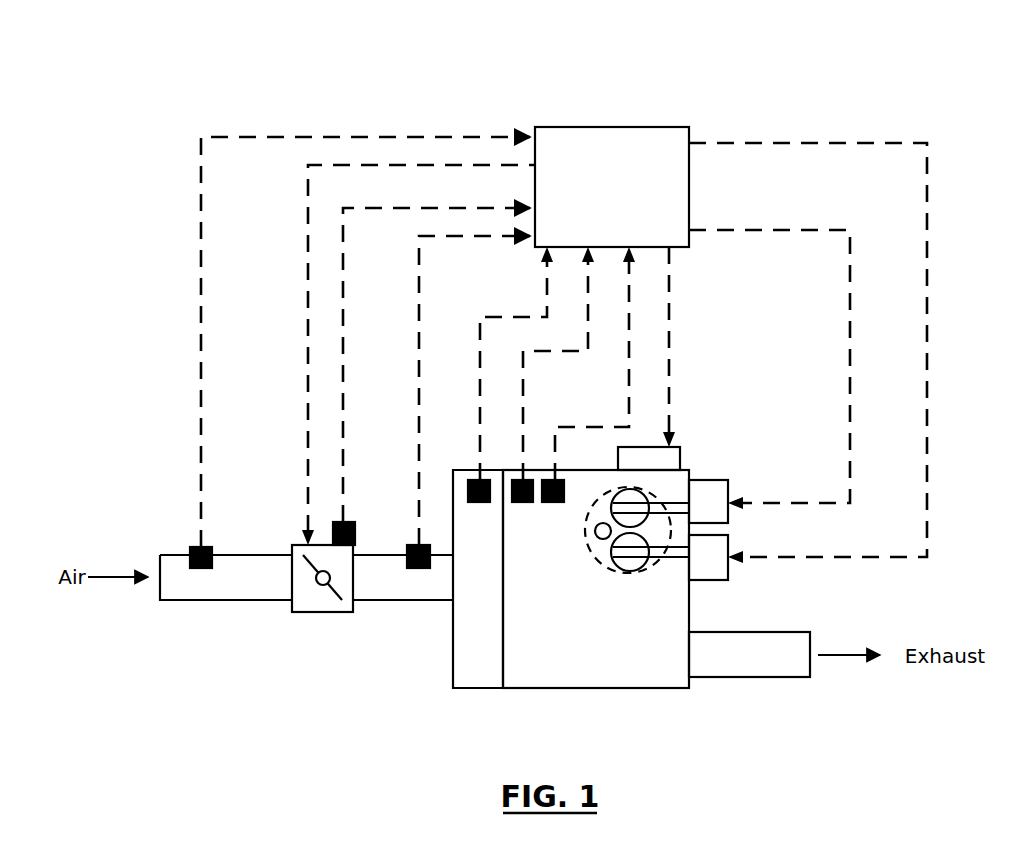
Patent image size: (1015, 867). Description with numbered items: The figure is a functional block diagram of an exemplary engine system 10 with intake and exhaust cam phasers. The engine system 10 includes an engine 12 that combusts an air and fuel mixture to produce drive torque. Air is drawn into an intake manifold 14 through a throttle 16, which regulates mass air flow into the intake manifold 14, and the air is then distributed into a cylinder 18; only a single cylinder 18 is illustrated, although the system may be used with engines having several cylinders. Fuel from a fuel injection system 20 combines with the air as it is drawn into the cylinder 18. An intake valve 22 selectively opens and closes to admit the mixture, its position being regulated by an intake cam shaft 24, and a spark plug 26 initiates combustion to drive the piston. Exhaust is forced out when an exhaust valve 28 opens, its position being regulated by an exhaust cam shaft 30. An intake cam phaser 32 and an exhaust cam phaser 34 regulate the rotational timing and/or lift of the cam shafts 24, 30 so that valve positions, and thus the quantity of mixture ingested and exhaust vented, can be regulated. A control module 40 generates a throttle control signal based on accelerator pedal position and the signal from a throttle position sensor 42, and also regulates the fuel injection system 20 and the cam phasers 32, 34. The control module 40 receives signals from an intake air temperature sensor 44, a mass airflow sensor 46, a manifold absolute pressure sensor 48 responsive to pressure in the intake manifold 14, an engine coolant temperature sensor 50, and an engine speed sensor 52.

The engine system 10 is at (301, 72).
The engine 12 is at (638, 688).
The intake manifold 14 is at (482, 688).
The throttle 16 is at (345, 612).
The cylinder 18 is at (615, 572).
The fuel injection system 20 is at (683, 458).
The intake valve 22 is at (625, 577).
The intake cam shaft 24 is at (678, 560).
The spark plug 26 is at (600, 540).
The exhaust valve 28 is at (613, 490).
The exhaust cam shaft 30 is at (662, 517).
The intake cam phaser 32 is at (718, 580).
The exhaust cam phaser 34 is at (730, 483).
The control module 40 is at (628, 125).
The throttle position sensor 42 is at (338, 523).
The intake air temperature sensor 44 is at (195, 545).
The mass airflow sensor 46 is at (417, 543).
The manifold absolute pressure sensor 48 is at (473, 482).
The engine coolant temperature sensor 50 is at (518, 482).
The engine speed sensor 52 is at (552, 480).